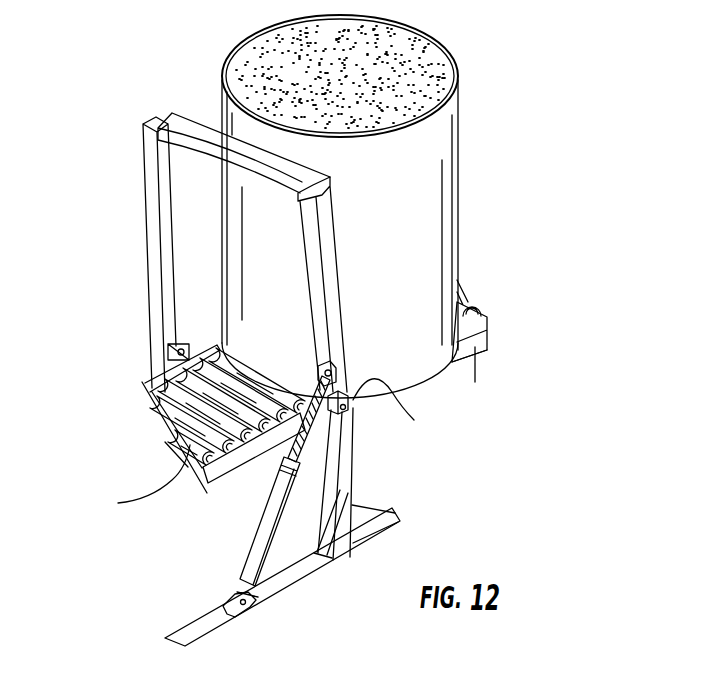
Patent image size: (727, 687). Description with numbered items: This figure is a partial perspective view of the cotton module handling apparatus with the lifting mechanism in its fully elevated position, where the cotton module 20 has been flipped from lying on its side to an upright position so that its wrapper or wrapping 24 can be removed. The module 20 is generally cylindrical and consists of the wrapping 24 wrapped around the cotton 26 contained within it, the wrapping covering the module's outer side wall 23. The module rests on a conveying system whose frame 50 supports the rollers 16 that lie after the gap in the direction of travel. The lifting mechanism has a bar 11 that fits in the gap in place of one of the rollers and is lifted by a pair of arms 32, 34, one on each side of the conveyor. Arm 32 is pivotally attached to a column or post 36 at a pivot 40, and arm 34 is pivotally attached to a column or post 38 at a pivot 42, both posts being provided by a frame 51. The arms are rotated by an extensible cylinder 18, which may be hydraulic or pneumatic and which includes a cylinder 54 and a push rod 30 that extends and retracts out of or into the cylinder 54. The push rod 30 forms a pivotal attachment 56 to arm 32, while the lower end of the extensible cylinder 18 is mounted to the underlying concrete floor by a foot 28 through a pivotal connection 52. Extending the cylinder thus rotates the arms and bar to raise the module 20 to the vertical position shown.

The bar 11 is at (200, 112).
The rollers 16 is at (478, 298).
The extensible cylinder 18 is at (262, 522).
The cotton module 20 is at (360, 199).
The side wall 23 is at (437, 203).
The wrapper or wrapping 24 is at (462, 70).
The cotton 26 is at (267, 62).
The foot 28 is at (230, 598).
The push rod 30 is at (301, 450).
The arm 32 is at (330, 303).
The arm 34 is at (150, 212).
The column or post 36 is at (347, 440).
The column or post 38 is at (157, 340).
The pivot or pivotal attachment 40 is at (408, 410).
The pivot or pivotal attachment 42 is at (153, 363).
The frame 50 is at (483, 343).
The frame 51 is at (358, 470).
The pivotal connection 52 is at (250, 604).
The cylinder 54 is at (278, 557).
The pivotal attachment 56 is at (318, 370).